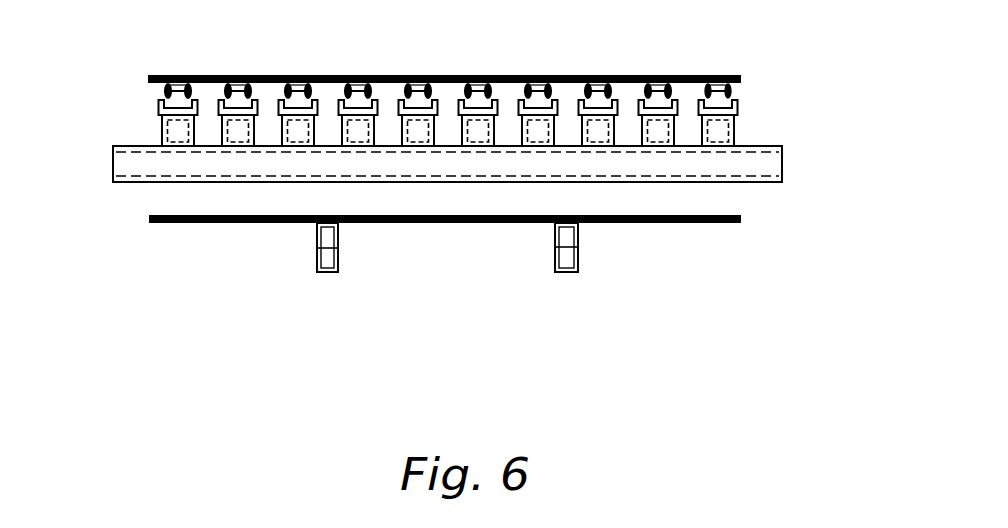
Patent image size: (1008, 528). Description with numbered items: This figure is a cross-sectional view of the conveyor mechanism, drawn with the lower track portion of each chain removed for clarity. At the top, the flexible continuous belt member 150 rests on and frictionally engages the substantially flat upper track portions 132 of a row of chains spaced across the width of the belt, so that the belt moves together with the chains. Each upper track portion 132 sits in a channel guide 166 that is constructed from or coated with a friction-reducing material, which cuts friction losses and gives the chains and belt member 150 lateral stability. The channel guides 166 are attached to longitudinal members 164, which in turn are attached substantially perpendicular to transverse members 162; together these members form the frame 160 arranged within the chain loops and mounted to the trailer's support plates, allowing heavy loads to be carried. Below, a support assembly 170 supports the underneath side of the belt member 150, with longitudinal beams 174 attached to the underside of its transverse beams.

The belt member 150 is at (150, 75).
The upper track portion 132 is at (733, 93).
The channel guide 166 is at (738, 107).
The longitudinal member 164 is at (738, 127).
The transverse member 162 is at (782, 165).
The frame 160 is at (761, 188).
The longitudinal beam 174 is at (338, 258).
The support assembly 170 is at (296, 262).